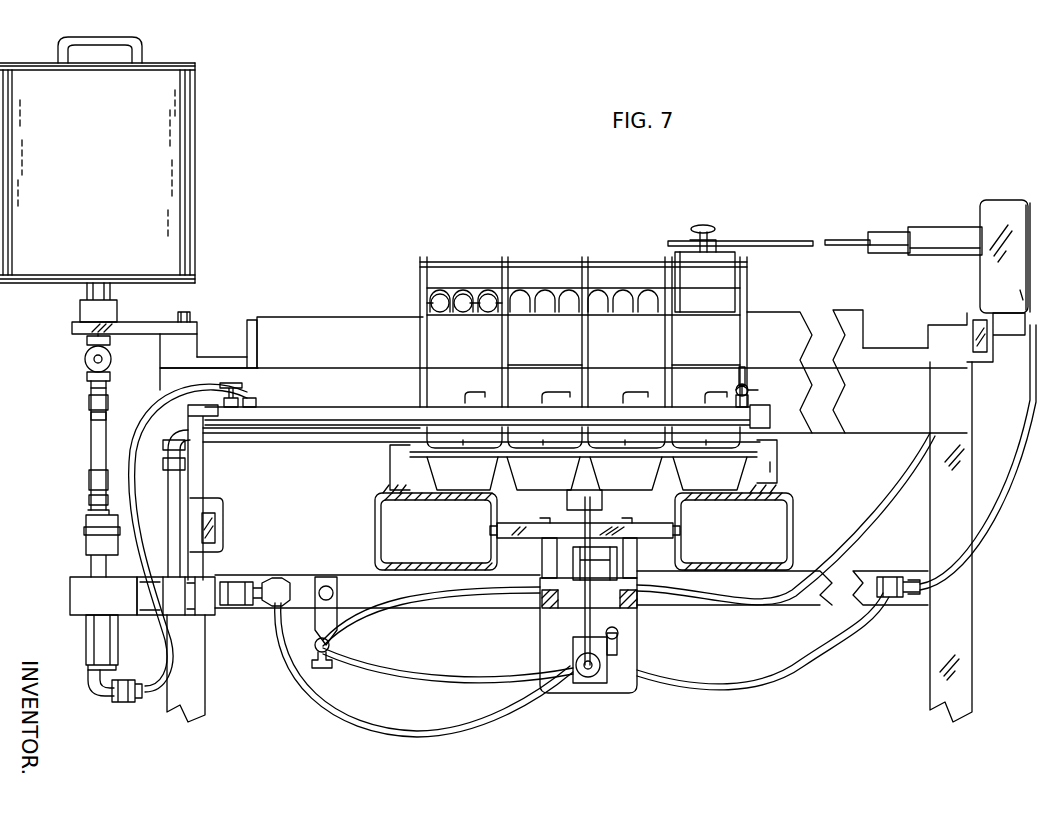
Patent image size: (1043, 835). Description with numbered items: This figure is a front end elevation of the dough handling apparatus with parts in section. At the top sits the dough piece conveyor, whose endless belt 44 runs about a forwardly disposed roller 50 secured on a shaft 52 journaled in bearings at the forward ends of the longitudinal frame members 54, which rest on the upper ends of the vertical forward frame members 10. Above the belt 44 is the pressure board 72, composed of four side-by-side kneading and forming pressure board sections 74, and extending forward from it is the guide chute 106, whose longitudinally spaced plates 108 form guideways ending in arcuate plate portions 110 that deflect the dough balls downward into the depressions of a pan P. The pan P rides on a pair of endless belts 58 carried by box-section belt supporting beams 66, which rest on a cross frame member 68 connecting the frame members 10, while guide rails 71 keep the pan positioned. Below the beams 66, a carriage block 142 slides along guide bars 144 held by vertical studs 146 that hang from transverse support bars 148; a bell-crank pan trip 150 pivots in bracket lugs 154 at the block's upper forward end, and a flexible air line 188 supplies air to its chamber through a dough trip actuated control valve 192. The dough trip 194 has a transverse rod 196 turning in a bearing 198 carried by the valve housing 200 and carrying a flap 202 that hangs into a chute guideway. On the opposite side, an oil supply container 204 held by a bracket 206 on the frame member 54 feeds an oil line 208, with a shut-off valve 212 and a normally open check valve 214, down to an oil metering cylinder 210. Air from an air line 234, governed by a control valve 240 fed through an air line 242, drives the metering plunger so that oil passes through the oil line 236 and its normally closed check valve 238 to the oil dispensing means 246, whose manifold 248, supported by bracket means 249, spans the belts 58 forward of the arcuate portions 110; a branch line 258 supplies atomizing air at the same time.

The vertical forward frame members 10 is at (205, 690).
The endless belt 44 is at (329, 317).
The forwardly disposed roller 50 is at (251, 320).
The shaft 52 is at (211, 355).
The longitudinal frame members 54 is at (160, 357).
The endless belts 58 is at (383, 494).
The belt supporting beams 66 is at (375, 540).
The cross frame member 68 is at (746, 600).
The guide rails 71 is at (410, 463).
The pan P is at (770, 467).
The pressure board 72 is at (444, 278).
The pressure board sections 74 is at (477, 290).
The guide chute 106 is at (425, 306).
The plates 108 is at (504, 351).
The arcuate plate portions 110 is at (448, 437).
The carriage block 142 is at (637, 690).
The guide bars 144 is at (548, 607).
The vertical studs 146 is at (542, 558).
The transverse support bars 148 is at (520, 524).
The pan trip 150 is at (603, 503).
The bracket lugs 154 is at (569, 553).
The flexible air line 188 is at (1000, 512).
The control valve 192 is at (997, 200).
The dough trip 194 is at (741, 241).
The rod 196 is at (848, 240).
The bearing 198 is at (931, 228).
The housing 200 is at (1000, 220).
The flap 202 is at (690, 275).
The oil supply container 204 is at (196, 190).
The bracket 206 is at (153, 310).
The oil line 208 is at (92, 430).
The oil metering cylinder 210 is at (85, 577).
The shut-off valve 212 is at (84, 359).
The check valve 214 is at (86, 540).
The air line 234 is at (306, 690).
The oil line 236 is at (162, 668).
The check valve 238 is at (118, 657).
The control valve 240 is at (590, 683).
The air line 242 is at (330, 650).
The oil dispensing means 246 is at (339, 440).
The manifold 248 is at (281, 407).
The bracket means 249 is at (205, 465).
The branch line 258 is at (135, 445).